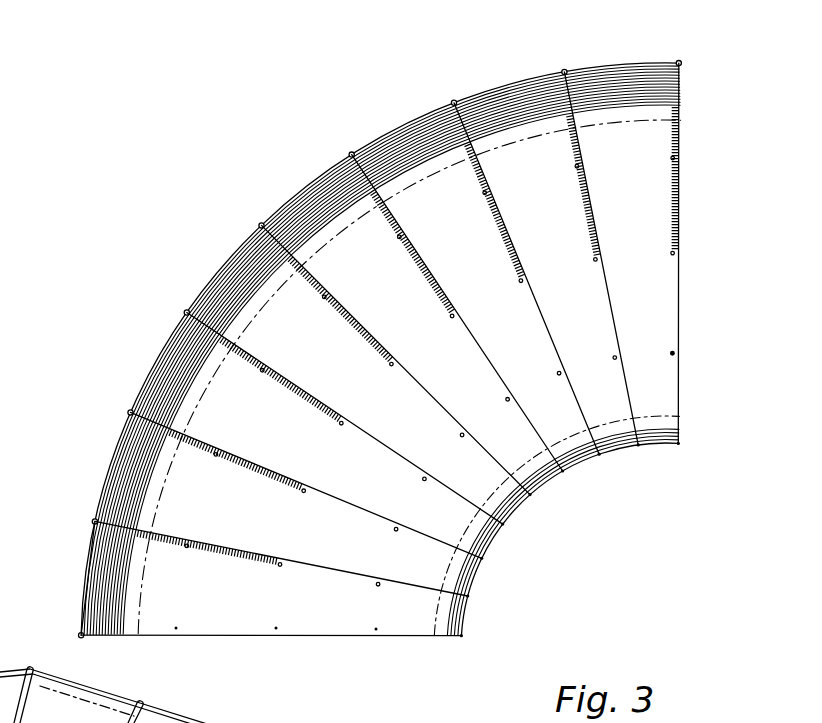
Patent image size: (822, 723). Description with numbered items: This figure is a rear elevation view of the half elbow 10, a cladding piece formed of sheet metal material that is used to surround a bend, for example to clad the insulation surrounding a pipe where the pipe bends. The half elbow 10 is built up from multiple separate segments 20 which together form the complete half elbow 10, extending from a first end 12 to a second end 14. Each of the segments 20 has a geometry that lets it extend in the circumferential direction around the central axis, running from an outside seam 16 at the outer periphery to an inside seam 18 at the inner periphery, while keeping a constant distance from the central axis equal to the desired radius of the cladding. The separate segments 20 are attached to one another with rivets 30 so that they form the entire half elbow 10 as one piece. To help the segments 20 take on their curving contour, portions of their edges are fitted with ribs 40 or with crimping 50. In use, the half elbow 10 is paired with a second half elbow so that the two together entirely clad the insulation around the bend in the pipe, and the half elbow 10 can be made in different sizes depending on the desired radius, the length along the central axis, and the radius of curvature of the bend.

The half elbow 10 is at (84, 278).
The first end 12 is at (683, 297).
The second end 14 is at (297, 638).
The outside seam 16 is at (241, 253).
The inside seam 18 is at (523, 504).
The segments 20 is at (170, 373).
The rivets 30 is at (617, 357).
The ribs 40 is at (80, 632).
The crimping 50 is at (260, 560).